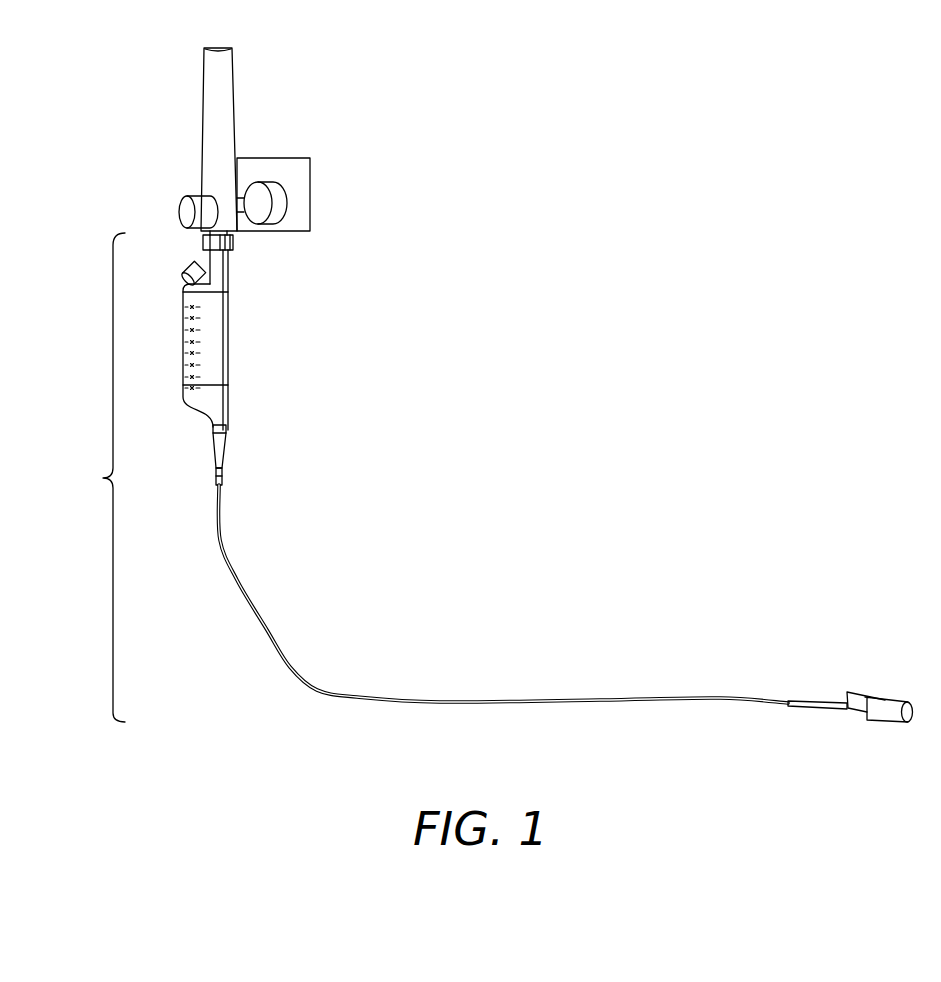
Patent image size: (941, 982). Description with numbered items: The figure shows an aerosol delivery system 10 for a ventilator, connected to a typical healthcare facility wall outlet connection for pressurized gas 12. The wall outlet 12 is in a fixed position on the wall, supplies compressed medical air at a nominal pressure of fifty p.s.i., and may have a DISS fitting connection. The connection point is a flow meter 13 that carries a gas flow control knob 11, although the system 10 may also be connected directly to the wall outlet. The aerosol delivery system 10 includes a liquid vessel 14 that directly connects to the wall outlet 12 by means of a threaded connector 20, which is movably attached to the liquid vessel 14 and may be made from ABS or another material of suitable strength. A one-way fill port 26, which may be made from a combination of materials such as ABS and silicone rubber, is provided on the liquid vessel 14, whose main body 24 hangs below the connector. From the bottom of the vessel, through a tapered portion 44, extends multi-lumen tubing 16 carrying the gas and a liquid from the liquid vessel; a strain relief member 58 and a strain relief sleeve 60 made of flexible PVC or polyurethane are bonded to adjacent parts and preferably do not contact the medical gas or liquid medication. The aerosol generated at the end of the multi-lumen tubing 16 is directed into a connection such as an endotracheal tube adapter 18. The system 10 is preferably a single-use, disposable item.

The aerosol delivery system 10 is at (101, 477).
The gas flow control knob 11 is at (183, 210).
The wall outlet connection for pressurized gas 12 is at (300, 172).
The flow meter 13 is at (232, 78).
The liquid vessel 14 is at (250, 294).
The multi-lumen tubing 16 is at (316, 689).
The endotracheal tube adapter 18 is at (893, 699).
The threaded connector 20 is at (233, 243).
The chamber 24 is at (225, 340).
The one-way fill port 26 is at (189, 268).
The tapered connector 44 is at (222, 448).
The strain relief member 58 is at (219, 480).
The strain relief sleeve 60 is at (797, 699).